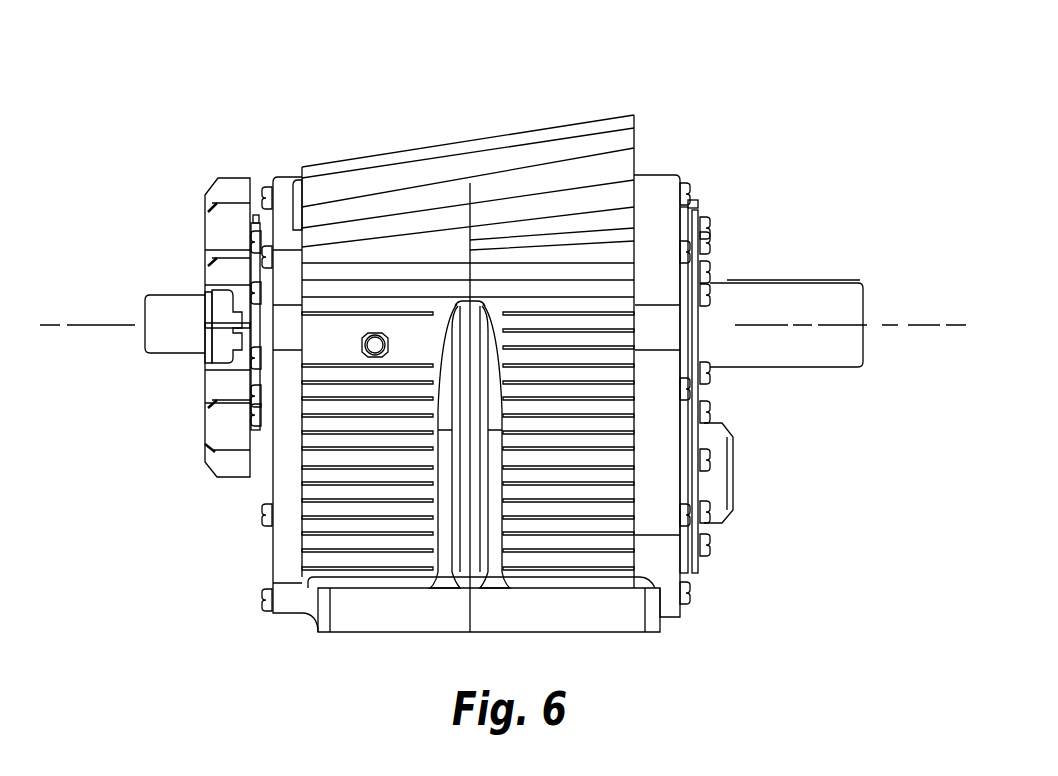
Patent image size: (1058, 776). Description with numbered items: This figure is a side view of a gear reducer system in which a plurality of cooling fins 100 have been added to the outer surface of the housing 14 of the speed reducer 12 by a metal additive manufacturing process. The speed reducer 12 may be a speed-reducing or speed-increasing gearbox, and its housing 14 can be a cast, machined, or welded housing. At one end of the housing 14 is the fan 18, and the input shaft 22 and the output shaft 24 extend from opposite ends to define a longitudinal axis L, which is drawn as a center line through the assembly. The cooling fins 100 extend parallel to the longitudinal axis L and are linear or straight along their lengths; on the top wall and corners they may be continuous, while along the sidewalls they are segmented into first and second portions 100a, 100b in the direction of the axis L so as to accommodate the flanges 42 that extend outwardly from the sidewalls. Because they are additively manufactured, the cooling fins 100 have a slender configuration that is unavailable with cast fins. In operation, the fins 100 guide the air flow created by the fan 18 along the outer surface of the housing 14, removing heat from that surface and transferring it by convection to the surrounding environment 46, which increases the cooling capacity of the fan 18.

The speed reducer 12 is at (627, 634).
The housing 14 is at (333, 340).
The fan 18 is at (212, 200).
The input shaft 22 is at (173, 308).
The output shaft 24 is at (768, 292).
The flanges 42 is at (463, 537).
The environment 46 is at (416, 118).
The cooling fins 100 is at (555, 168).
The first portion of cooling fins 100a is at (573, 465).
The second portion of cooling fins 100b is at (357, 465).
The longitudinal axis L is at (913, 327).